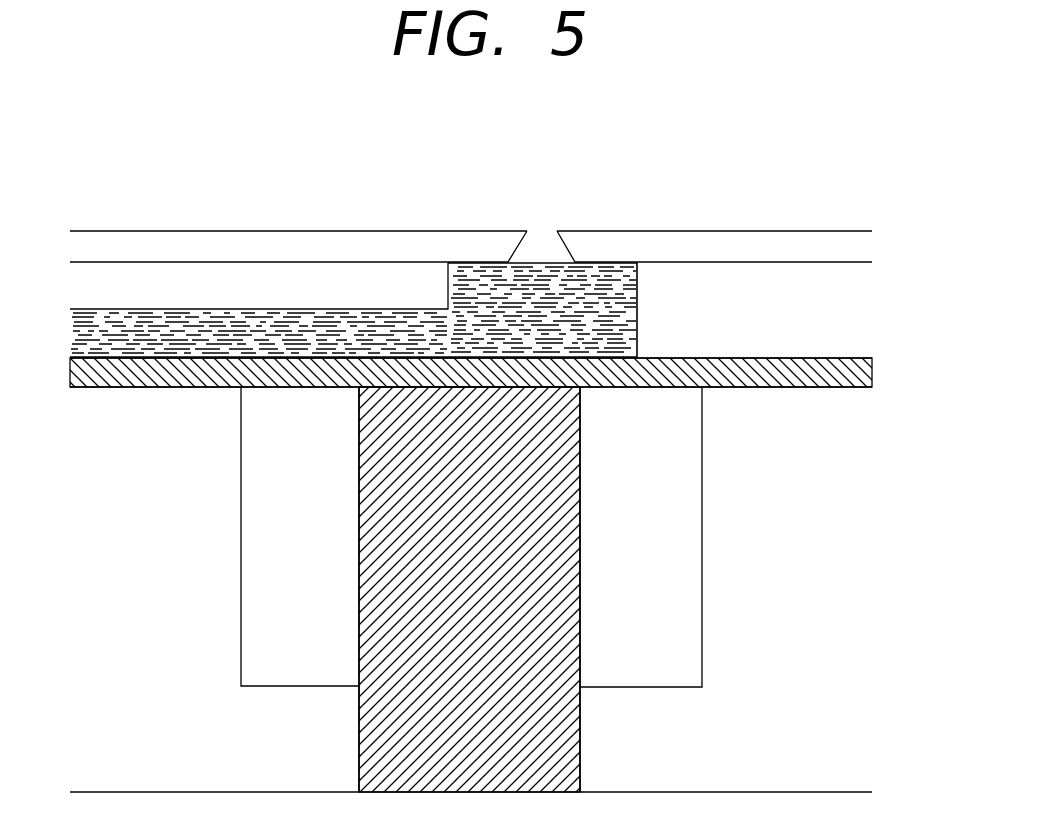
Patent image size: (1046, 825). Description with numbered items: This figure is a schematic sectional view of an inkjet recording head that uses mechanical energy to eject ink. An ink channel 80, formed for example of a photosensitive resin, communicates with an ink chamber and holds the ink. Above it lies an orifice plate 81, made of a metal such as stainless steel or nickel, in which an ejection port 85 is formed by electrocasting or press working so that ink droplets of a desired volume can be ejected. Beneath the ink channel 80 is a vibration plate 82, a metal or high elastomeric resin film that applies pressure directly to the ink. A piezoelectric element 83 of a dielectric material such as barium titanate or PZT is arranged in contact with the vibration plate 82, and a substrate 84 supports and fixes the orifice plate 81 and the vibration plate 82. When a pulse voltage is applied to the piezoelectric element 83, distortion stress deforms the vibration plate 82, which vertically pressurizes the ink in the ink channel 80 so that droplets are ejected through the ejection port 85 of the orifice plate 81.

The ink channel 80 is at (316, 280).
The orifice plate 81 is at (825, 240).
The vibration plate 82 is at (793, 390).
The piezoelectric element 83 is at (563, 593).
The substrate 84 is at (702, 517).
The ejection port 85 is at (540, 245).